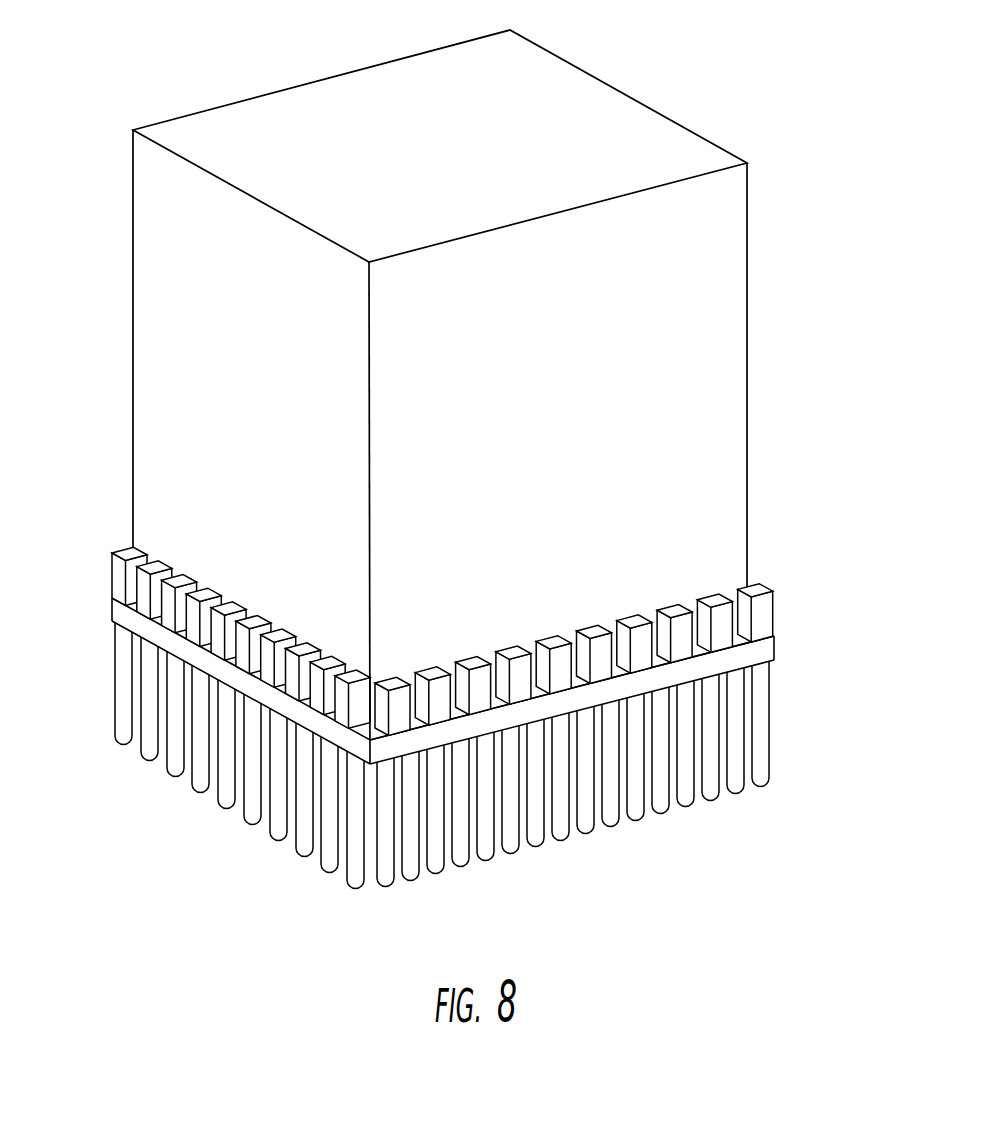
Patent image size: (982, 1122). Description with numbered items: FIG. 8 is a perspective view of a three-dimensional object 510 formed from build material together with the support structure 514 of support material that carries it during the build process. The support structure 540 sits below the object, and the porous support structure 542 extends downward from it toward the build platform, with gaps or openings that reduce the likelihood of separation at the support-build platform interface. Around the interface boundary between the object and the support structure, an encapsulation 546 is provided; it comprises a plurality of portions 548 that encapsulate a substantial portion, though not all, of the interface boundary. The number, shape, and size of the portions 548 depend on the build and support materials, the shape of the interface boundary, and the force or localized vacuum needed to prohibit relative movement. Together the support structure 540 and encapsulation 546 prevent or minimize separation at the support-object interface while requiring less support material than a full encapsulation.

The three-dimensional object 510 is at (482, 420).
The support structure 540 is at (110, 622).
The porous support structure 542 is at (117, 683).
The portions 548 is at (715, 590).
The encapsulation 546 is at (763, 583).
The support structure 514 is at (774, 650).